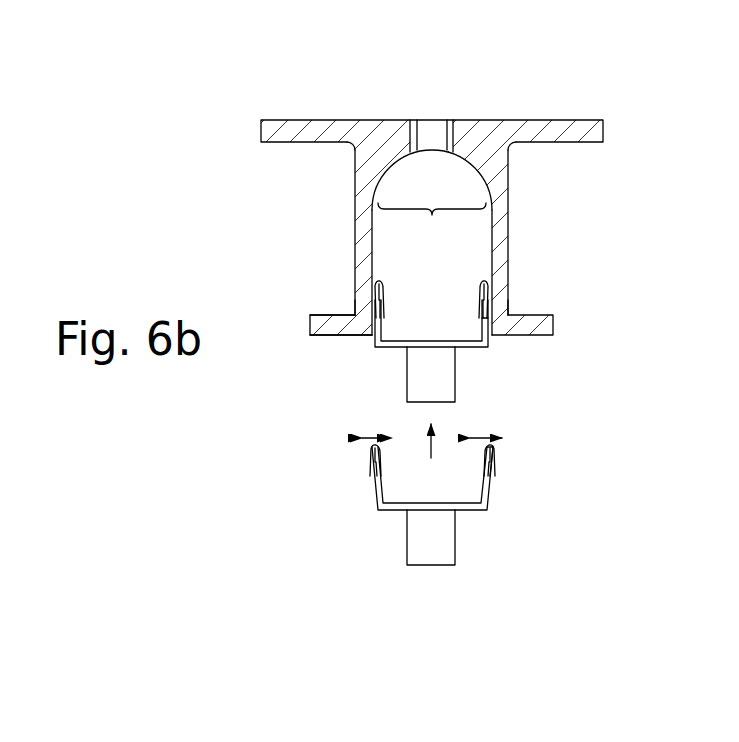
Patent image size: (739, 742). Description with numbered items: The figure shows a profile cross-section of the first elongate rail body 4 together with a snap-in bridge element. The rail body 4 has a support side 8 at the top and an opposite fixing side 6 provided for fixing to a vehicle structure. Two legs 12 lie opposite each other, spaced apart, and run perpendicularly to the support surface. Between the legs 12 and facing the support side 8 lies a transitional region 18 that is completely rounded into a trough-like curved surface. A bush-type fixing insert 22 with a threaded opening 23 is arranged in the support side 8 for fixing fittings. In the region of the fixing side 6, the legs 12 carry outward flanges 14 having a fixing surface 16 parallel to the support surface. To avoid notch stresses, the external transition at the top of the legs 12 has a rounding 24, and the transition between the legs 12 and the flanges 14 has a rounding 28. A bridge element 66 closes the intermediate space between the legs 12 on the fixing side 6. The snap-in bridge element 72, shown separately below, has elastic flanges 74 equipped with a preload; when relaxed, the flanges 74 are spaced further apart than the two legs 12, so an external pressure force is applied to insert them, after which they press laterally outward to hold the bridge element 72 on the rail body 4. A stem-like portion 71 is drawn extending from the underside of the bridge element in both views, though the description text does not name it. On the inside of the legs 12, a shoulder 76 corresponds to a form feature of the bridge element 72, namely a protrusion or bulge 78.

The first elongate rail body 4 is at (532, 80).
The support side 8 is at (299, 103).
The threaded opening 23 is at (425, 112).
The fixing insert 22 is at (437, 110).
The rounding 24 is at (350, 148).
The legs 12 is at (340, 232).
The transitional region 18 is at (432, 199).
The rounding 28 is at (350, 308).
The outward flanges 14 is at (320, 324).
The fixing surface 16 is at (335, 336).
The fixing side 6 is at (573, 322).
The bridge element 66 is at (470, 347).
The shoulder 76 is at (500, 320).
The elastic flange 74 is at (484, 288).
The stem 71 is at (415, 362).
The bridge element 72 is at (478, 508).
The bulge 78 is at (487, 482).